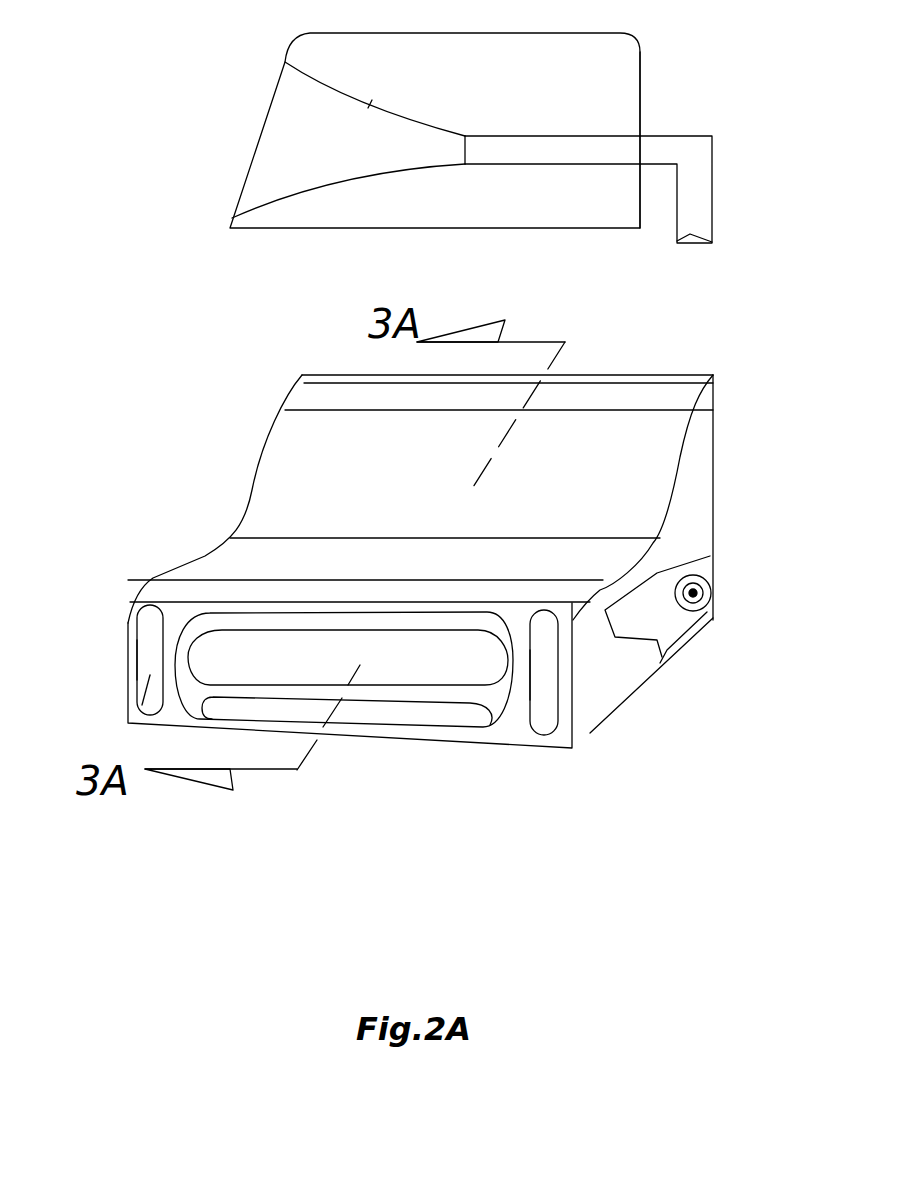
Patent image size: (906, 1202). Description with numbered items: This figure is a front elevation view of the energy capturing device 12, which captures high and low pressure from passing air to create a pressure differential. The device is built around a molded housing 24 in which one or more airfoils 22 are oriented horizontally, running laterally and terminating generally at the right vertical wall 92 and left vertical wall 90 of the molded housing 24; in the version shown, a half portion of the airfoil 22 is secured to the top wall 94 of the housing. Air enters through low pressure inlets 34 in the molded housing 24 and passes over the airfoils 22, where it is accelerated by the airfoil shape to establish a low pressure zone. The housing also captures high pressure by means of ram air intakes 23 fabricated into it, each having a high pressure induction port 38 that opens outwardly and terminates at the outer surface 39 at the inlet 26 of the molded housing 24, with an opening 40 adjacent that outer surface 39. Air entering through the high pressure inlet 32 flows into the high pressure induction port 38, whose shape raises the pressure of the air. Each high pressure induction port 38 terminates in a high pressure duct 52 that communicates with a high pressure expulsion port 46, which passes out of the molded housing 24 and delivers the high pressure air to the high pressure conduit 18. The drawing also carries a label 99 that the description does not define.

The energy capturing device 12 is at (250, 24).
The high pressure conduit 18 is at (712, 170).
The airfoil 22 is at (218, 648).
The ram air intake 23 is at (380, 94).
The molded housing 24 is at (640, 50).
The inlet 26 is at (248, 164).
The high pressure inlet 32 is at (282, 112).
The low pressure inlet 34 is at (428, 618).
The high pressure induction port 38 is at (358, 148).
The outer surface 39 is at (687, 645).
The opening 40 is at (137, 657).
The high pressure expulsion port 46 is at (640, 157).
The high pressure duct 52 is at (535, 143).
The left vertical wall 90 is at (250, 490).
The right vertical wall 92 is at (627, 678).
The top wall 94 is at (598, 447).
The rear wall 99 is at (640, 96).